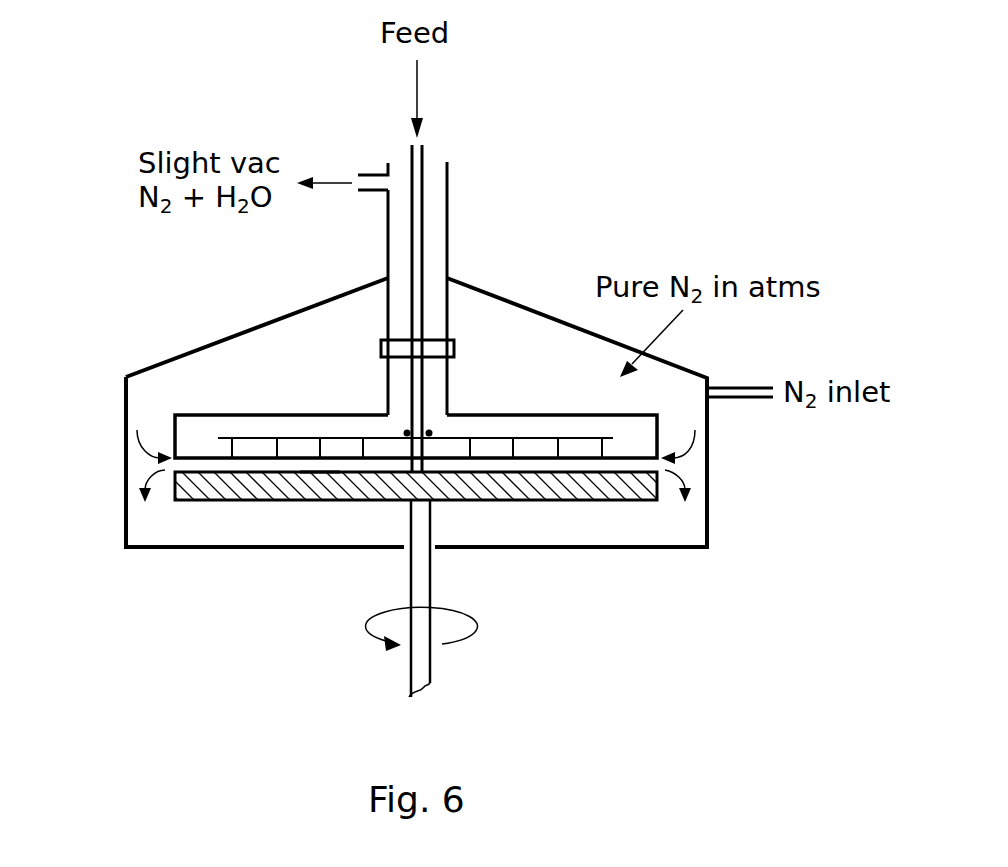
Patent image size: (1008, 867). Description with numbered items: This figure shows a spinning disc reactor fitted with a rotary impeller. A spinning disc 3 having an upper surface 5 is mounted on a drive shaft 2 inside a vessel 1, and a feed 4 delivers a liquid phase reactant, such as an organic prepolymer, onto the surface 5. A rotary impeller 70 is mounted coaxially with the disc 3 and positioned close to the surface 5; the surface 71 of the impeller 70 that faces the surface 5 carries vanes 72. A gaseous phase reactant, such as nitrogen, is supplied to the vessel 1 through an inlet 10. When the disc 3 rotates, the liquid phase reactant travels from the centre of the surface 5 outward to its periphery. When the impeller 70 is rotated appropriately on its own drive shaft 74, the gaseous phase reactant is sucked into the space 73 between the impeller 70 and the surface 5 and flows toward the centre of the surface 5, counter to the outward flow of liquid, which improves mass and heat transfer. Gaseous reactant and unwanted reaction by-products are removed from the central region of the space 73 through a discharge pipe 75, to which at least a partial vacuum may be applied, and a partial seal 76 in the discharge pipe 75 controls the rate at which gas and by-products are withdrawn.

The vessel 1 is at (126, 473).
The drive shaft 2 is at (408, 663).
The spinning disc 3 is at (227, 502).
The feed 4 is at (423, 208).
The surface 5 is at (318, 474).
The inlet 10 is at (748, 388).
The rotary impeller 70 is at (657, 416).
The surface of the impeller 71 is at (195, 462).
The vanes 72 is at (252, 447).
The space 73 is at (660, 466).
The drive shaft 74 is at (455, 268).
The discharge pipe 75 is at (403, 265).
The partial seal 76 is at (381, 349).